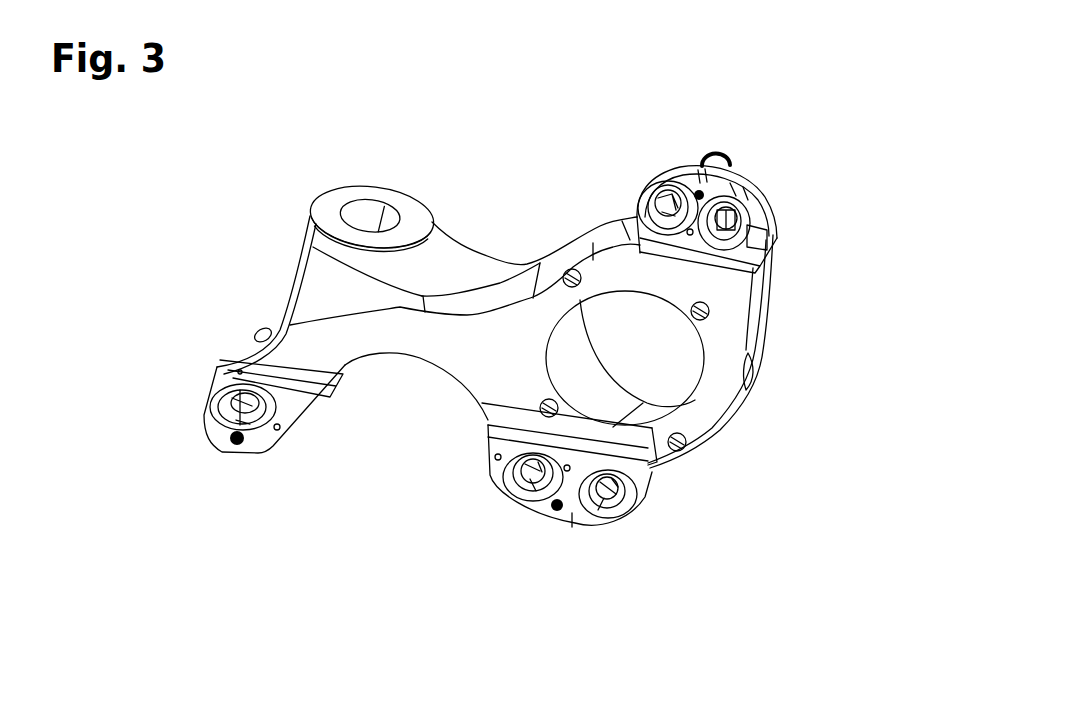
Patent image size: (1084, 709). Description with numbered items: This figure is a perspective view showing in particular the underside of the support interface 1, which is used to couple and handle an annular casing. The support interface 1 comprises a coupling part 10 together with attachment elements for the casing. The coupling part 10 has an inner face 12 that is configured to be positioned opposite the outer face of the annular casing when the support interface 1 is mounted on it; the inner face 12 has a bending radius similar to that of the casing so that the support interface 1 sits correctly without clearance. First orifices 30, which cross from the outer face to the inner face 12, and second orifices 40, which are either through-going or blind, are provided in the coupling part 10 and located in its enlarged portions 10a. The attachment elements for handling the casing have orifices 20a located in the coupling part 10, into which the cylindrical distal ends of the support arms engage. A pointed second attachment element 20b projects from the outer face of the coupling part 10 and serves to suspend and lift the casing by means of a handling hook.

The support interface 1 is at (857, 112).
The coupling part 10 is at (487, 275).
The enlarged portions 10a is at (717, 193).
The inner face 12 is at (493, 352).
The orifices 20a is at (660, 360).
The second attachment element 20b is at (343, 193).
The first orifices 30 is at (740, 220).
The second orifices 40 is at (669, 195).